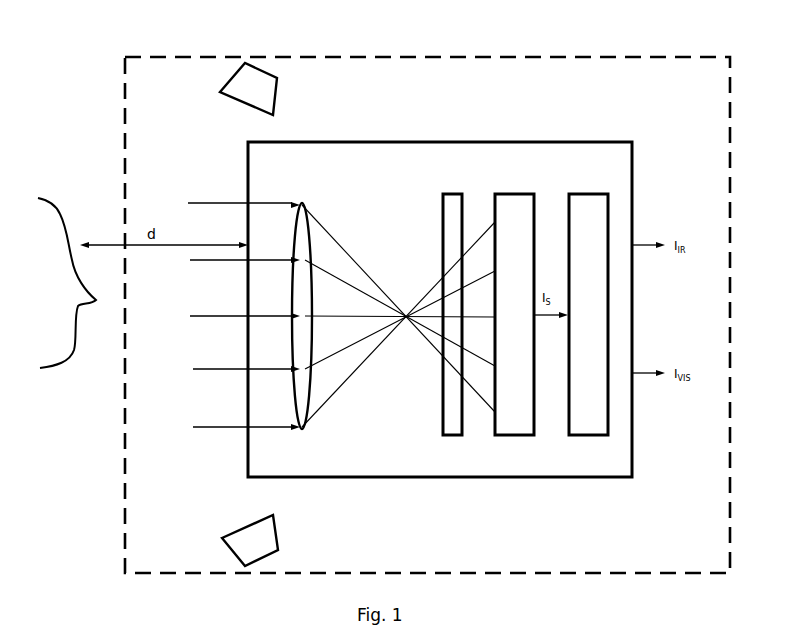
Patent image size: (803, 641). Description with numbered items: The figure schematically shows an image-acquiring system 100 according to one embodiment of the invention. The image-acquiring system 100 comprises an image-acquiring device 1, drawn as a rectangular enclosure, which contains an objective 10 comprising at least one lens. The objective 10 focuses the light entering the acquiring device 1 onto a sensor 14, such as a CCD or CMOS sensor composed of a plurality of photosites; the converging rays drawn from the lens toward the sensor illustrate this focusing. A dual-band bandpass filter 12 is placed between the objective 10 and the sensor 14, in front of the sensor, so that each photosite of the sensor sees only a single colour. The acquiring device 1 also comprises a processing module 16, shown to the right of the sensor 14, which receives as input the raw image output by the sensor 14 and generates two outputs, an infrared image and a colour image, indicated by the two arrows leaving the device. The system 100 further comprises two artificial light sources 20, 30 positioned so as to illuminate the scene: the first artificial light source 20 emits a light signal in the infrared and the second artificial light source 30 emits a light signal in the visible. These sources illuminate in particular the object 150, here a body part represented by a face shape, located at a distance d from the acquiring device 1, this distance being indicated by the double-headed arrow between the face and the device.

The image-acquiring system 100 is at (435, 57).
The image-acquiring device 1 is at (388, 143).
The objective 10 is at (300, 205).
The dual-band bandpass filter 12 is at (455, 193).
The sensor 14 is at (518, 192).
The processing module 16 is at (595, 193).
The first artificial light source 20 is at (248, 89).
The second artificial light source 30 is at (250, 540).
The object 150 is at (57, 200).